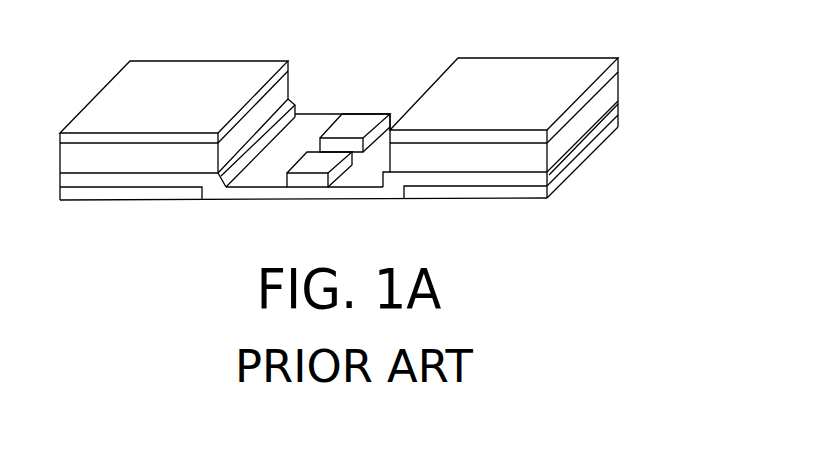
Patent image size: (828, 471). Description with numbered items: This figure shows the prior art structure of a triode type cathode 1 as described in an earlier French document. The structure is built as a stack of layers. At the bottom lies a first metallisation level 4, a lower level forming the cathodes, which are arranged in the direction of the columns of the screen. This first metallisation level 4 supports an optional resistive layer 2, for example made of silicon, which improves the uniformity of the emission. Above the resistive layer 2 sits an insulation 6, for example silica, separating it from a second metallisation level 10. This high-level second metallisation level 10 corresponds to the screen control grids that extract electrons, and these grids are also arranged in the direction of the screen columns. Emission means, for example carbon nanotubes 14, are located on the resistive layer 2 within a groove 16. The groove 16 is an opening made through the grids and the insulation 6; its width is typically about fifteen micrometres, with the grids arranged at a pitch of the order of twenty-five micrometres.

The triode type cathode 1 is at (650, 118).
The resistive layer 2 is at (228, 193).
The first metallisation level 4 is at (95, 194).
The insulation 6 is at (286, 100).
The second metallisation level 10 is at (221, 64).
The carbon nanotubes 14 is at (312, 168).
The groove 16 is at (384, 104).